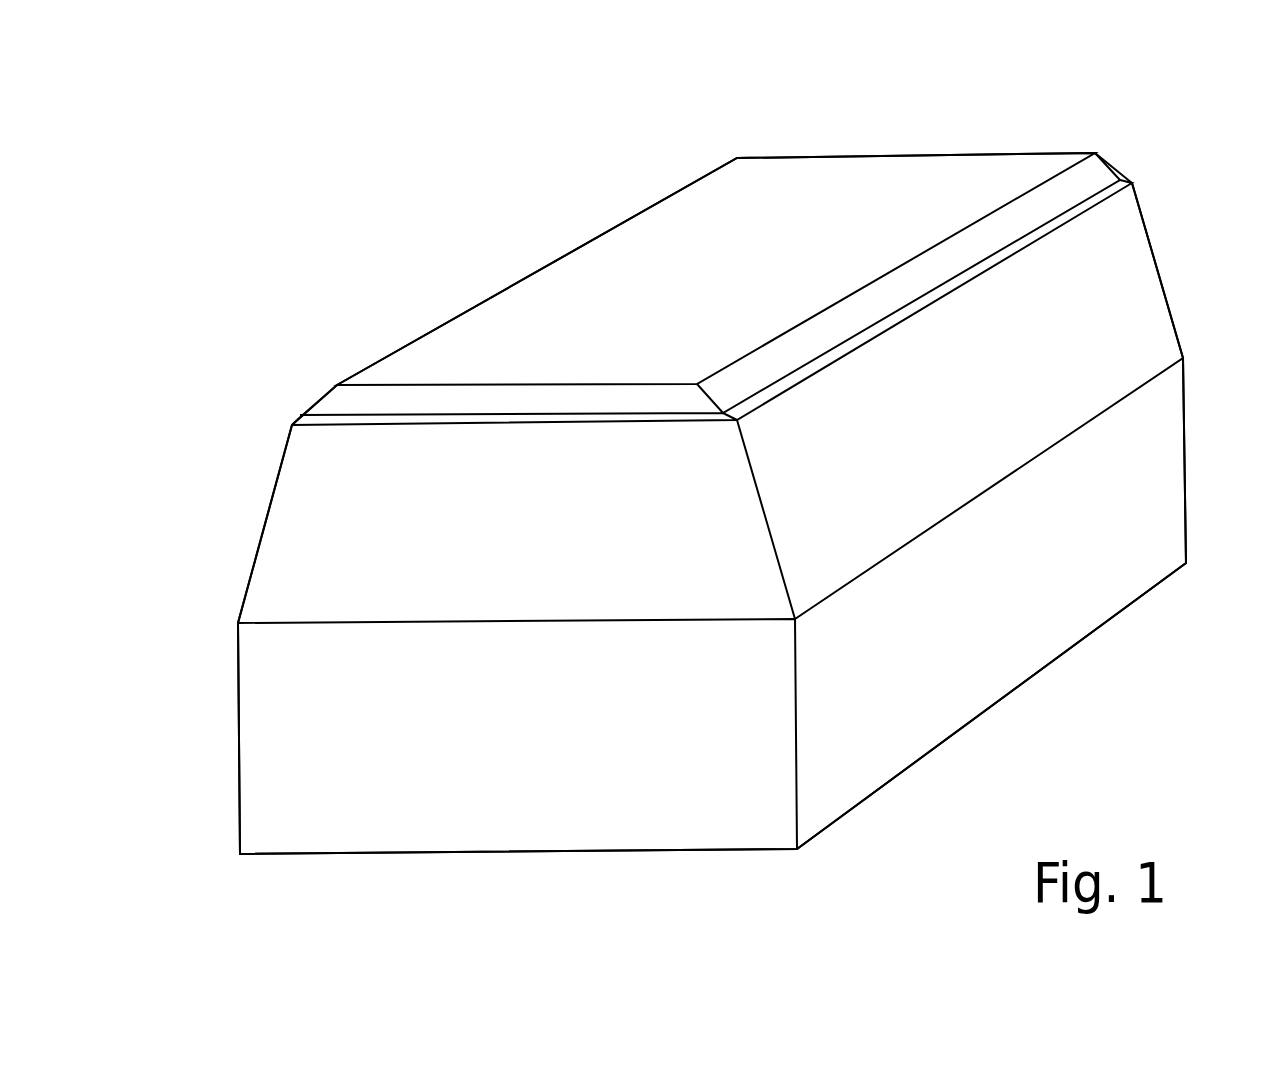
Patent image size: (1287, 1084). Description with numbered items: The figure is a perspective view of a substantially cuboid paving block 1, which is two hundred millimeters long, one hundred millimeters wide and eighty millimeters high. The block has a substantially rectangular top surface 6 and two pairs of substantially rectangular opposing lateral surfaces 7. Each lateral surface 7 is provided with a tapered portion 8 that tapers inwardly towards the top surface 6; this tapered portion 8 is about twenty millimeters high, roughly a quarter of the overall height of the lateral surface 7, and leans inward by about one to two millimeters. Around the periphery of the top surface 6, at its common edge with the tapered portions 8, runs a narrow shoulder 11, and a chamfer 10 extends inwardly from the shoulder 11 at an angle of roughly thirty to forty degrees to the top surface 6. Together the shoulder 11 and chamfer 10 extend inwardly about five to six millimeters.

The paving block 1 is at (1108, 130).
The top surface 6 is at (622, 265).
The lateral surfaces 7 is at (258, 790).
The tapered portion 8 is at (291, 483).
The chamfer 10 is at (404, 403).
The shoulder 11 is at (300, 417).